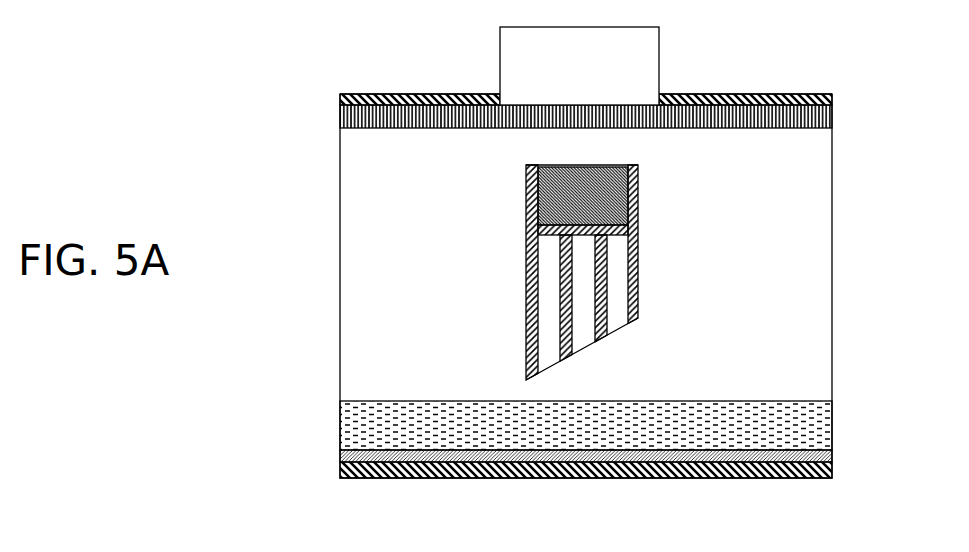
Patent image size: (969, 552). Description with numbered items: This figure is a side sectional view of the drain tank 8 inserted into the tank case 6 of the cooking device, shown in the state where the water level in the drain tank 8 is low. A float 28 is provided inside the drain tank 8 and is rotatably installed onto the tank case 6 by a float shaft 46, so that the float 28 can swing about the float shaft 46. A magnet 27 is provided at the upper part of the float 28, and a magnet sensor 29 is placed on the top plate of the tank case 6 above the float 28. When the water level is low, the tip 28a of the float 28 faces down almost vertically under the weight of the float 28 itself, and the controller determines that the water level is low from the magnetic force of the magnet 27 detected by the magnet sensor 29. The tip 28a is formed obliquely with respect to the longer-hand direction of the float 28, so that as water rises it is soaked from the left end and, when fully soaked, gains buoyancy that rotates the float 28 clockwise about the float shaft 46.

The tank case 6 is at (405, 93).
The magnet sensor 29 is at (642, 73).
The drain tank 8 is at (387, 212).
The magnet 27 is at (640, 170).
The float shaft 46 is at (640, 188).
The float 28 is at (640, 281).
The tip of float 28a is at (582, 350).